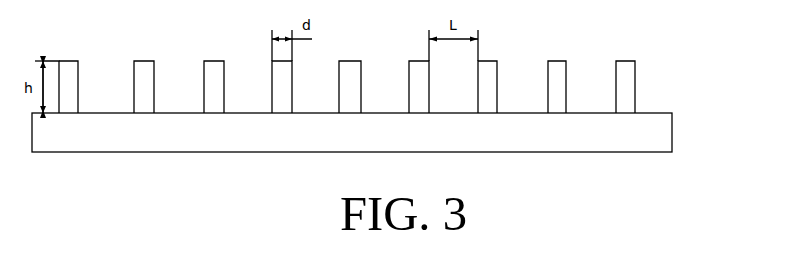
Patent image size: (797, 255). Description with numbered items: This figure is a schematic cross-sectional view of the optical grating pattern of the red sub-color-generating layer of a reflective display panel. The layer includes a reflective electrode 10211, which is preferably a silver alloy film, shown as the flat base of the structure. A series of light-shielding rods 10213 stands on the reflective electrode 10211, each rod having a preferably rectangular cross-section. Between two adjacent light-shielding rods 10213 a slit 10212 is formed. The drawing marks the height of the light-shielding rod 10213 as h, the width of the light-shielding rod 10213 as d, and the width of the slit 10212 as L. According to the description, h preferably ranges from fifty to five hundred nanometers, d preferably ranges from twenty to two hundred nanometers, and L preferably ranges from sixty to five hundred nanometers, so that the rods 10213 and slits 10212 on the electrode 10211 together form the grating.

The reflective electrode 10211 is at (618, 131).
The slit 10212 is at (106, 65).
The light-shielding rod 10213 is at (213, 66).